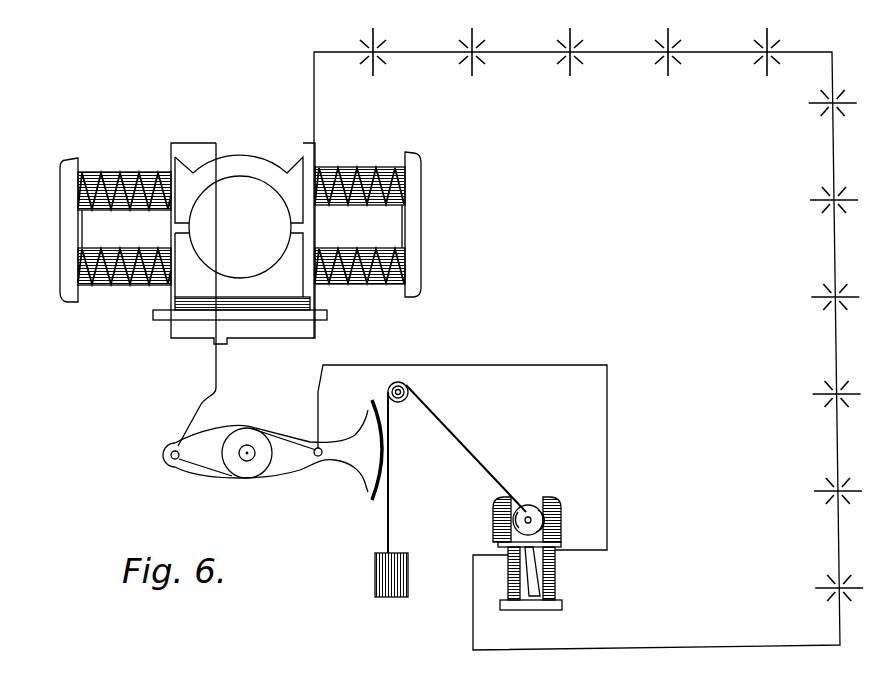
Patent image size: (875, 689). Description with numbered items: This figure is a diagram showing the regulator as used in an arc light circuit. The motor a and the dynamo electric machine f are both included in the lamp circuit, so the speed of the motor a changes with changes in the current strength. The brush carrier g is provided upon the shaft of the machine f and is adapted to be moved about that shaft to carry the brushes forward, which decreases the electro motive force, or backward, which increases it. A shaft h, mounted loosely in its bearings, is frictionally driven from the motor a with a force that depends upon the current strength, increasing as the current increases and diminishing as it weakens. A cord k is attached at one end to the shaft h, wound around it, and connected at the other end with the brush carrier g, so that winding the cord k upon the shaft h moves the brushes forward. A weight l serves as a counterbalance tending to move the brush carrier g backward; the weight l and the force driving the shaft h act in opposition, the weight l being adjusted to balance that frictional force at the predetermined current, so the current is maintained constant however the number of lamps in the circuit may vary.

The dynamo electric machine f is at (240, 243).
The brush carrier g is at (272, 450).
The cord k is at (457, 469).
The shaft h is at (529, 509).
The weight l is at (397, 575).
The motor a is at (530, 589).